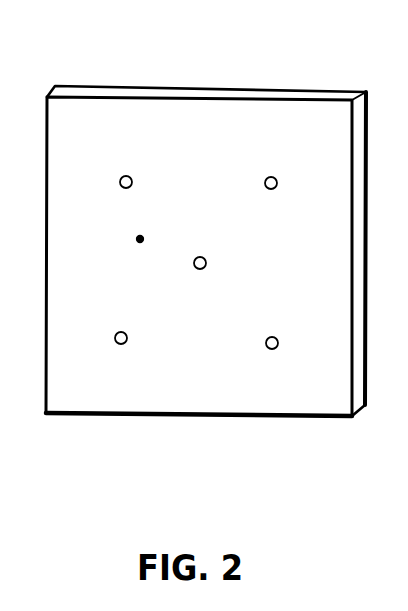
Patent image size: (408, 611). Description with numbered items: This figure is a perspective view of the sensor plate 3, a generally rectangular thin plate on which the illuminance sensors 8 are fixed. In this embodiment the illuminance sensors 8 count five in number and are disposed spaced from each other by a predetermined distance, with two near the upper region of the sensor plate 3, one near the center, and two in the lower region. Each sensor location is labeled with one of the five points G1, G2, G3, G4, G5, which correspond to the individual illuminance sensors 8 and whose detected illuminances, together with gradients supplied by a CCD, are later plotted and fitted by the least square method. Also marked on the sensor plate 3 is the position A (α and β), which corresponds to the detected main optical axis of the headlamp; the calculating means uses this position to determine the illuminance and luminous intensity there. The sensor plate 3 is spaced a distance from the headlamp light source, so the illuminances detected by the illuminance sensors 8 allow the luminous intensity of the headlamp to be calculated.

The sensor plate 3 is at (326, 408).
The illuminance sensors 8 is at (198, 255).
The point G1 is at (207, 247).
The point G2 is at (116, 166).
The point G3 is at (288, 173).
The point G4 is at (104, 341).
The point G5 is at (290, 344).
The position A (α, β) A is at (140, 259).